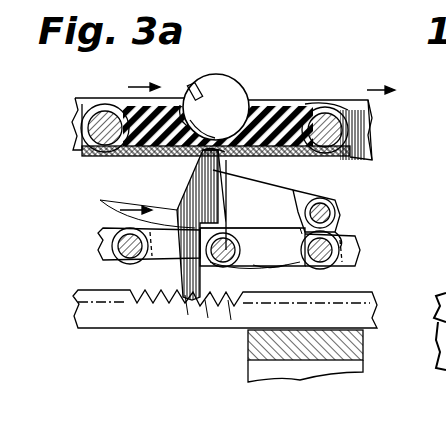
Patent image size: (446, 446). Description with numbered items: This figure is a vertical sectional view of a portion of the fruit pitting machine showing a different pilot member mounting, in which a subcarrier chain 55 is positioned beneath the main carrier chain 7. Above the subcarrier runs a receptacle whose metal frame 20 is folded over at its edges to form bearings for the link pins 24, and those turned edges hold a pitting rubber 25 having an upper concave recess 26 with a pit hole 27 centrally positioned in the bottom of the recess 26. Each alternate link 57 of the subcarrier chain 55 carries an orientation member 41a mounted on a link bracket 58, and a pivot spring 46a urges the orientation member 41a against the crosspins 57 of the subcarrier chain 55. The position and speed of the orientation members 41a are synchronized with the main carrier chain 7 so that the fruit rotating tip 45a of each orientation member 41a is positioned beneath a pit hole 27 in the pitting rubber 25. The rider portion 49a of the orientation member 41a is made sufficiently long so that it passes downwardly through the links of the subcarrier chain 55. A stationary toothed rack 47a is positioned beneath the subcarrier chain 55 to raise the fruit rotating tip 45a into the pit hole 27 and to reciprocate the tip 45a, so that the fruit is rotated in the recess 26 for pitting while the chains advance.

The carrier chain 7 is at (378, 110).
The metal frame 20 is at (305, 110).
The link pin 24 is at (330, 120).
The pitting rubber 25 is at (282, 112).
The upper concave recess 26 is at (186, 82).
The pit hole 27 is at (215, 148).
The orientation member 41a is at (262, 212).
The fruit rotating tip 45a is at (222, 157).
The pivot spring 46a is at (310, 187).
The toothed rack 47a is at (227, 313).
The rider portion 49a is at (183, 268).
The subcarrier chain 55 is at (270, 277).
The link 57 is at (330, 240).
The link bracket 58 is at (300, 265).